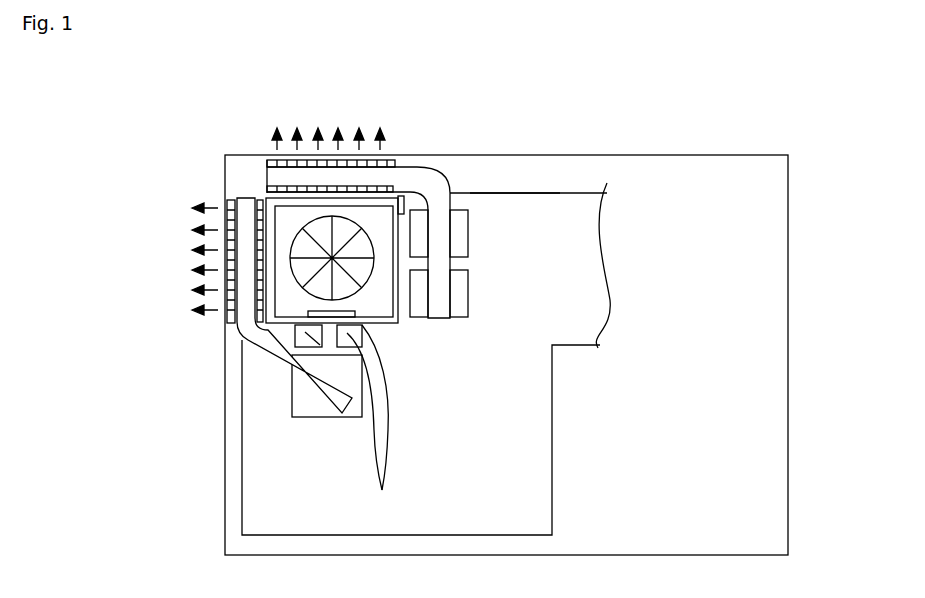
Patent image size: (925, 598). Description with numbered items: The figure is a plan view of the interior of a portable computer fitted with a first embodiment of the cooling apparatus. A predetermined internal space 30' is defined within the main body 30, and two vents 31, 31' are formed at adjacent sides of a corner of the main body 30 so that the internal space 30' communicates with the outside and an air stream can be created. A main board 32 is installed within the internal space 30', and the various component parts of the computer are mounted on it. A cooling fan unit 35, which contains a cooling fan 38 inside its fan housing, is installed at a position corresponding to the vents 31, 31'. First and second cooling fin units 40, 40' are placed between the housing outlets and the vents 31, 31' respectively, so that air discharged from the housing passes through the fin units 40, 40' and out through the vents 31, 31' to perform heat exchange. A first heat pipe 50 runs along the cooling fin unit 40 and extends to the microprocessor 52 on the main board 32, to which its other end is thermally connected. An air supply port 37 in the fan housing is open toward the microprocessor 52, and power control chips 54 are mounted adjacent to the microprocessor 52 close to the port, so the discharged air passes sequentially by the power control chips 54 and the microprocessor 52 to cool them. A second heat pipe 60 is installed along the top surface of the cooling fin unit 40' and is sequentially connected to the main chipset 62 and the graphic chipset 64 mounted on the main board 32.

The main body 30 is at (506, 320).
The internal space 30' is at (472, 359).
The vent 31 is at (184, 259).
The vent 31' is at (331, 128).
The main board 32 is at (510, 193).
The cooling fan unit 35 is at (400, 215).
The air supply port 37 is at (338, 299).
The cooling fan 38 is at (303, 250).
The first cooling fin unit 40 is at (211, 243).
The second cooling fin unit 40' is at (338, 150).
The first heat pipe 50 is at (260, 349).
The microprocessor 52 is at (296, 402).
The power control chip 54 is at (382, 490).
The second heat pipe 60 is at (443, 193).
The main chipset 62 is at (458, 235).
The graphic chipset 64 is at (458, 297).